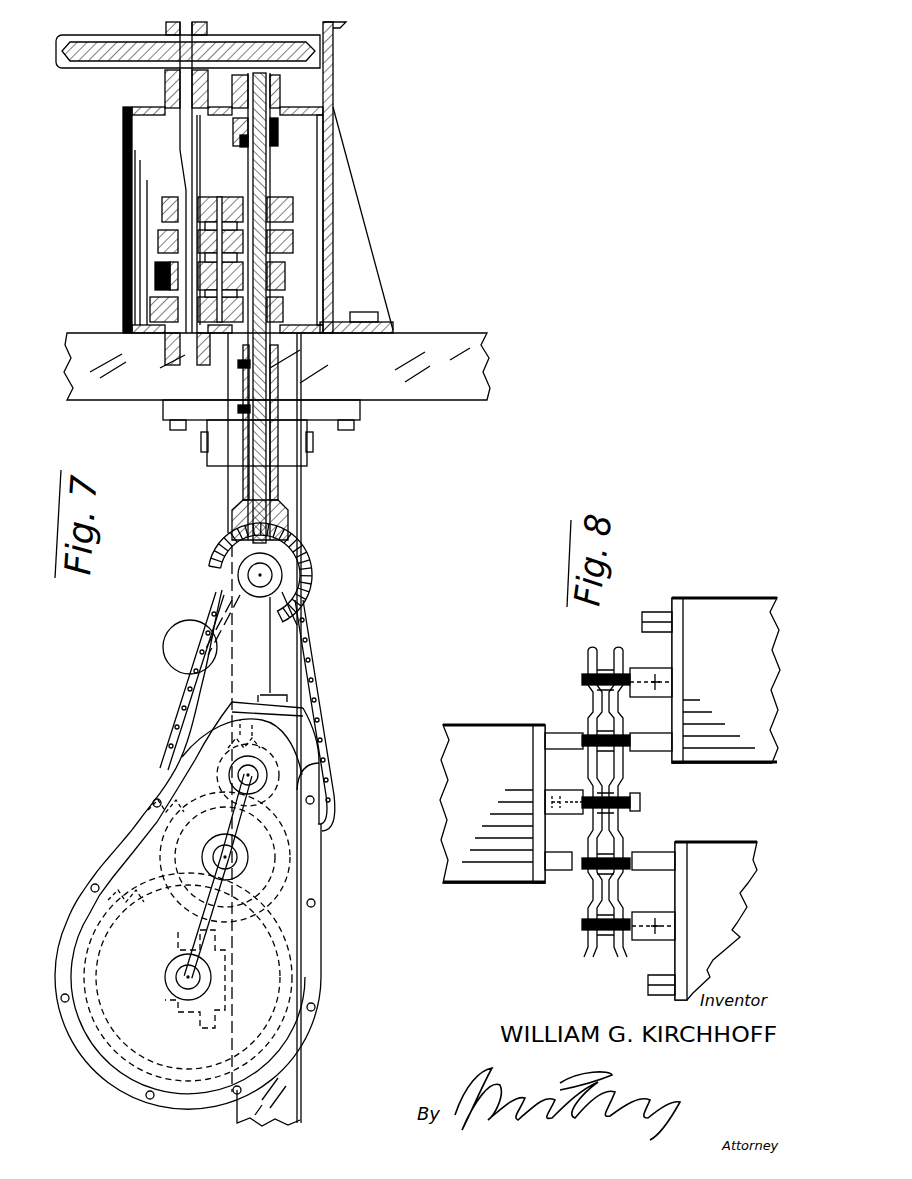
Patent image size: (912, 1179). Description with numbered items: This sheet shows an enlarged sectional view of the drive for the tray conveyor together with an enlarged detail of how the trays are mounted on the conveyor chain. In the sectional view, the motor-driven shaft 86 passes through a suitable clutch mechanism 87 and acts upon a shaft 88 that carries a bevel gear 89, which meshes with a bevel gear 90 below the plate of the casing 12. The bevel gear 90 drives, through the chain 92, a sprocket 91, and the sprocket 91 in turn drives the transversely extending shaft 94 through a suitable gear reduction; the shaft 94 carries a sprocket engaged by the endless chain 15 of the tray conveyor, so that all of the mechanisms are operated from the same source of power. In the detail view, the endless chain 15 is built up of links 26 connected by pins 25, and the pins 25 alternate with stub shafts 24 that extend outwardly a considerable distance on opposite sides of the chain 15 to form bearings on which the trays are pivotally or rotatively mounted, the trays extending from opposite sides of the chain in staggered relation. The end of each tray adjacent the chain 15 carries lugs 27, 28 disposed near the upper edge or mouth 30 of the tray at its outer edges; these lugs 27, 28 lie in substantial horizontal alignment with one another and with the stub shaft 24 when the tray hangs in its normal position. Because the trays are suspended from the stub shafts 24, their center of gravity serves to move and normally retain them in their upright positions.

In FIG. 7, the casing 12 is at (405, 392).
In FIG. 7, the shaft 86 is at (188, 147).
In FIG. 7, the clutch mechanism 87 is at (155, 275).
In FIG. 7, the shaft 88 is at (262, 462).
In FIG. 7, the bevel gear 89 is at (238, 527).
In FIG. 7, the bevel gear 90 is at (208, 566).
In FIG. 7, the sprocket 91 is at (208, 728).
In FIG. 7, the chain 92 is at (192, 693).
In FIG. 7, the transversely extending shaft 94 is at (192, 978).
In FIG. 8, the endless chain 15 is at (590, 910).
In FIG. 8, the stub shaft 24 is at (640, 803).
In FIG. 8, the pins 25 is at (585, 733).
In FIG. 8, the links 26 is at (597, 715).
In FIG. 8, the lug 27 is at (557, 737).
In FIG. 8, the lug 28 is at (560, 870).
In FIG. 8, the upper edge or mouth 30 is at (455, 865).